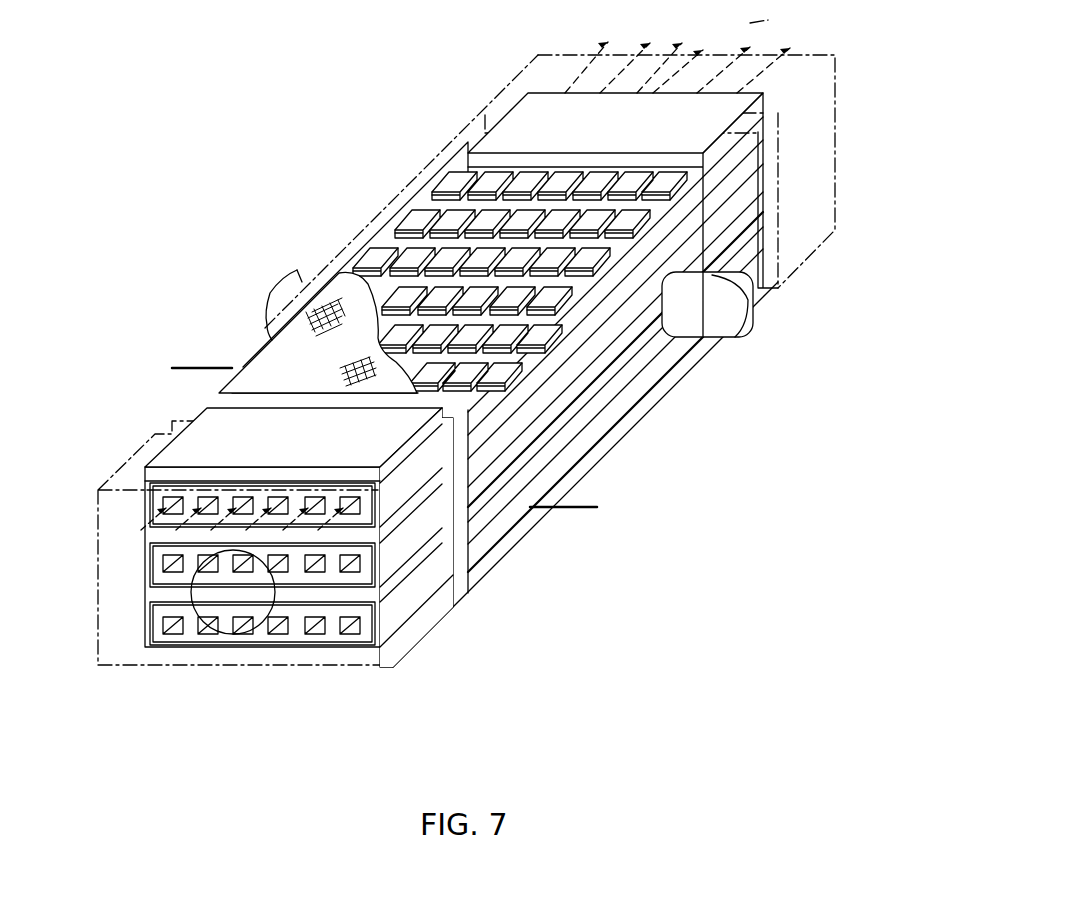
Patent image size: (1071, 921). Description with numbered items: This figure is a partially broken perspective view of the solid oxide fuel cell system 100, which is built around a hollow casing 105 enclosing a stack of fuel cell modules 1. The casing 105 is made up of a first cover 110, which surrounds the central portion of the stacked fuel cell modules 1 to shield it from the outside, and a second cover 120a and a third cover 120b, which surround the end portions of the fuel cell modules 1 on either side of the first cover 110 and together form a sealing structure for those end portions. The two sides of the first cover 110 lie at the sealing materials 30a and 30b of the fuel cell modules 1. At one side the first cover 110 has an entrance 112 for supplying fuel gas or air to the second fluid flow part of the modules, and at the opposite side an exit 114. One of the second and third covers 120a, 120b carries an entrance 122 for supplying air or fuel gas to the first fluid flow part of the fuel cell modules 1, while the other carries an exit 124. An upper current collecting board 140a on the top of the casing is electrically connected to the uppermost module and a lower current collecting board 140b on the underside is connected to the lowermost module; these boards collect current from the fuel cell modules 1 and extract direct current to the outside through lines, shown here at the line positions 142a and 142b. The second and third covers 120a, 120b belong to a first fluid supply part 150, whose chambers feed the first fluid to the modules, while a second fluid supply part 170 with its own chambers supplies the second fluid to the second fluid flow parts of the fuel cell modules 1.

The fuel cell module 1 is at (505, 392).
The solid oxide fuel cell system 100 is at (477, 385).
The hollow casing 105 is at (436, 340).
The first cover 110 is at (415, 188).
The second cover 120a is at (123, 477).
The third cover 120b is at (535, 72).
The entrance 112 is at (296, 270).
The exit 114 is at (743, 293).
The entrance 122 is at (224, 634).
The exit 124 is at (722, 53).
The upper current collecting board 140a is at (267, 350).
The lower current collecting board 140b is at (600, 442).
The first terminal 142a is at (203, 365).
The second terminal 142b is at (578, 510).
The first fluid supply part 150 is at (267, 586).
The second fluid supply part 170 is at (267, 283).
The sealing material 30a is at (728, 132).
The sealing material 30b is at (330, 533).